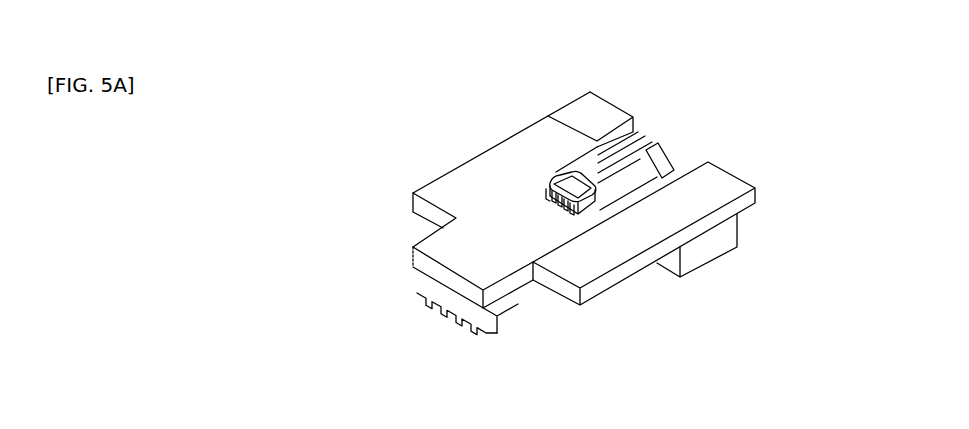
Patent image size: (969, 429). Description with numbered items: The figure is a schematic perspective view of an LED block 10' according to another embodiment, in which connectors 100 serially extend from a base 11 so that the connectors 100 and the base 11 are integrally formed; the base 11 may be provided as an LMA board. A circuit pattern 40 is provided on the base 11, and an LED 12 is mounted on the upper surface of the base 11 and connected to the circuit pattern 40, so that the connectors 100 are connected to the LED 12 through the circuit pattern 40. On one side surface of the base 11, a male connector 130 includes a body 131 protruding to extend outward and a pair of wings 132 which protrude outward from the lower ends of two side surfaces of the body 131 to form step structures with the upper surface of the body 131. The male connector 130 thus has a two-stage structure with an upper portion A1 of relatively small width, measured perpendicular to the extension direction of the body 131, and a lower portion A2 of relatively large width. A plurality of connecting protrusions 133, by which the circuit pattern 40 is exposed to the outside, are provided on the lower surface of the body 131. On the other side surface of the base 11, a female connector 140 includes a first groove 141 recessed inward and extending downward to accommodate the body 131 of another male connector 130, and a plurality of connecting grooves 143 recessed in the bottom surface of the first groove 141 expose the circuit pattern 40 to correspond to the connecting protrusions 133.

The LED block 10' is at (532, 52).
The base 11 is at (478, 188).
The LED 12 is at (565, 183).
The circuit pattern 40 is at (582, 160).
The connector 100 is at (496, 242).
The female connector 140 is at (655, 235).
The first groove 141 is at (636, 126).
The connecting groove 143 is at (653, 160).
The male connector 130 is at (371, 331).
The body 131 is at (443, 308).
The wing 132 is at (440, 283).
The connecting protrusion 133 is at (455, 318).
The upper portion A1 is at (410, 265).
The lower portion A2 is at (380, 228).